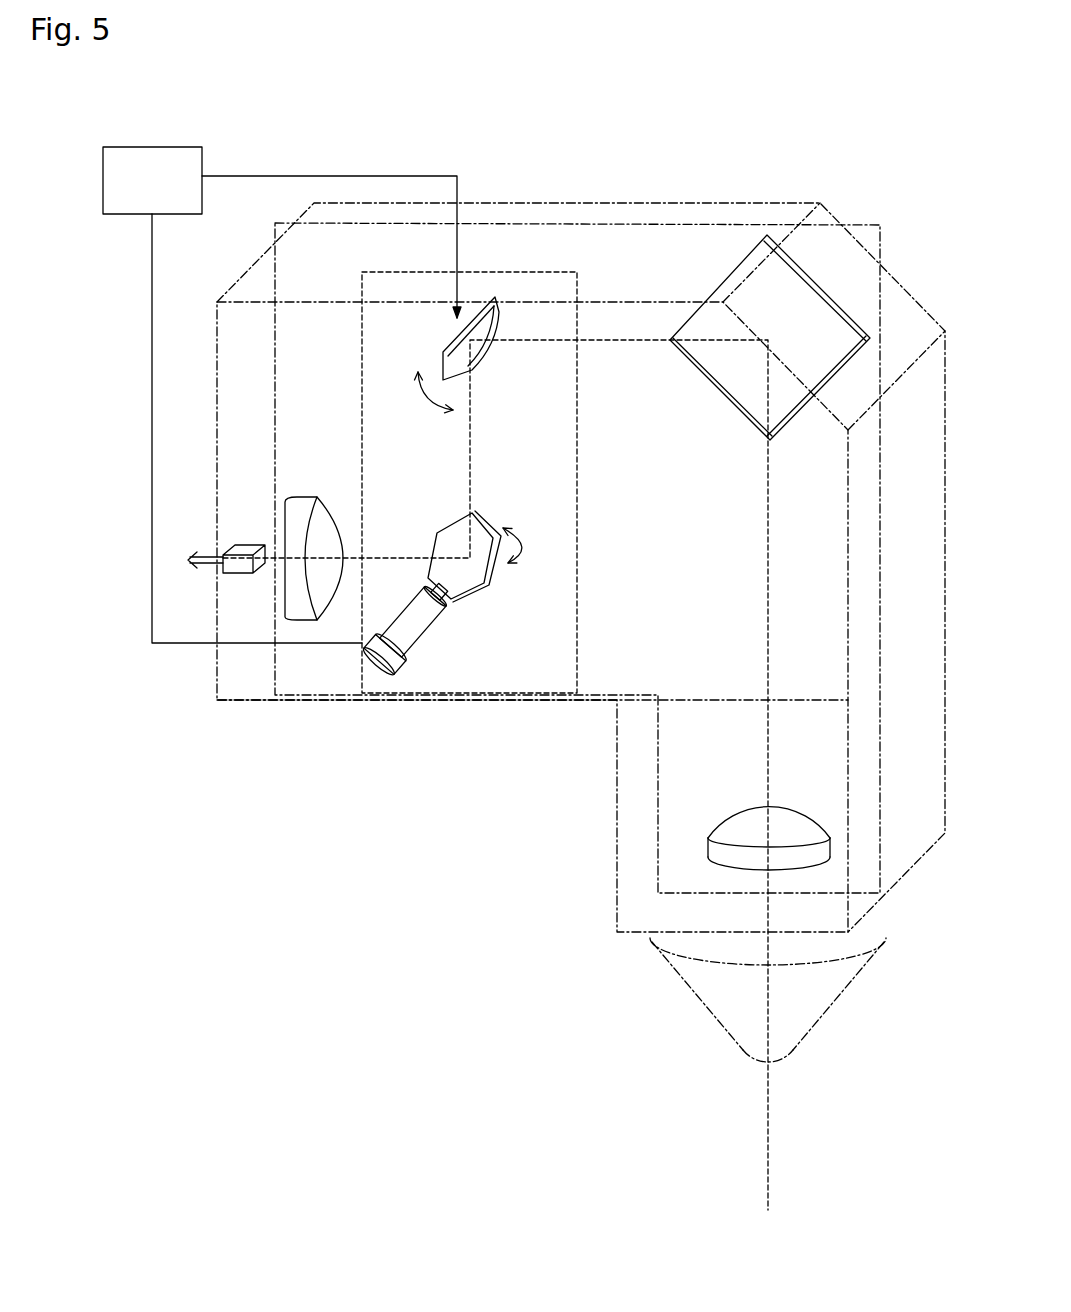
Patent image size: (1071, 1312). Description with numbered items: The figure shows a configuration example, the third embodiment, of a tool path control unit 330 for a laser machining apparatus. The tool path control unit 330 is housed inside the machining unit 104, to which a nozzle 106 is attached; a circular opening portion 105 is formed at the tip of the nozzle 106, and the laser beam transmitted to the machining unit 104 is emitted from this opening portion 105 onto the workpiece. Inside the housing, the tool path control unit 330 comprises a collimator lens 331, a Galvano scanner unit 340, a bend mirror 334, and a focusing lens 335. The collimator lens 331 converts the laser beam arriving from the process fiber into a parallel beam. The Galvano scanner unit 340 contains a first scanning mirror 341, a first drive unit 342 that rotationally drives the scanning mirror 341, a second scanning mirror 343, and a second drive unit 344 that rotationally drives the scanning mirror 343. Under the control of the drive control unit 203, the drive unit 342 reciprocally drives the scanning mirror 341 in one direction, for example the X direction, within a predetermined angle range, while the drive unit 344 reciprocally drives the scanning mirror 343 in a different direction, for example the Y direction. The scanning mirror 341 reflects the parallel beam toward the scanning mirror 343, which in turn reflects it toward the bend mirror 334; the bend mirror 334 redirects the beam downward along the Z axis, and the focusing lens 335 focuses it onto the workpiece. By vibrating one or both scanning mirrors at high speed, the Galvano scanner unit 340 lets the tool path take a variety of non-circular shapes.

The machining unit 104 is at (943, 838).
The opening portion 105 is at (773, 1063).
The nozzle 106 is at (848, 990).
The drive control unit 203 is at (158, 146).
The tool path control unit 330 is at (276, 667).
The collimator lens 331 is at (308, 497).
The bend mirror 334 is at (752, 250).
The focusing lens 335 is at (812, 822).
The Galvano scanner unit 340 is at (579, 478).
The scanning mirror 341 is at (450, 530).
The drive unit 342 is at (420, 646).
The scanning mirror 343 is at (490, 296).
The drive unit 344 is at (450, 322).